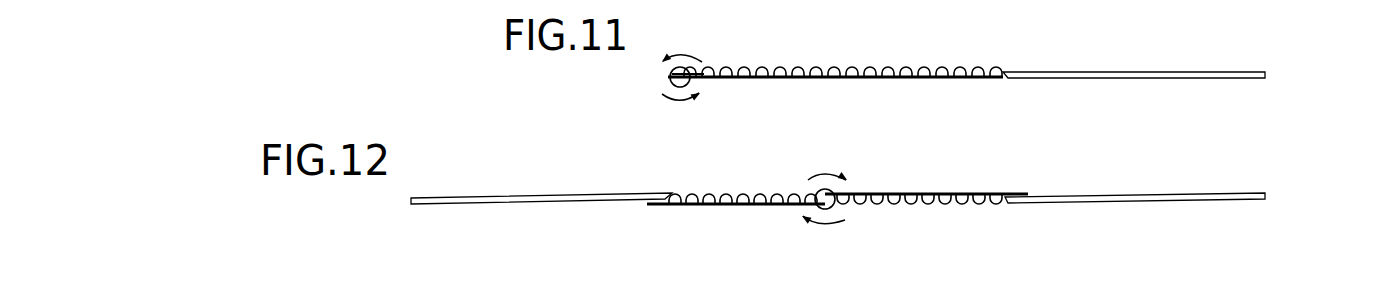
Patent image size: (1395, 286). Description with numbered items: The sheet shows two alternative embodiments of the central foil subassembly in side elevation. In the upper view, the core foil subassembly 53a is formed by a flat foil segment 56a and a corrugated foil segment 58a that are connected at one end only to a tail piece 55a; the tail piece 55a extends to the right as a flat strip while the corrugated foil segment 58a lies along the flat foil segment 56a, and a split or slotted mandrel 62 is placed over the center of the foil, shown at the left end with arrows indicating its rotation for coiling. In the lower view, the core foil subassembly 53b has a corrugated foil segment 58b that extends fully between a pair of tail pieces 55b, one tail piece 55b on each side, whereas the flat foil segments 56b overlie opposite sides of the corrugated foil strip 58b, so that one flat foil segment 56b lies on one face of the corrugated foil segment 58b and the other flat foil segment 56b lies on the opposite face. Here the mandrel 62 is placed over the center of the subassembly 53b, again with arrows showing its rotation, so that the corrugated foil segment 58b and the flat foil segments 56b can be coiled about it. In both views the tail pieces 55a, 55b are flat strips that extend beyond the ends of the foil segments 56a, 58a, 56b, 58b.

In FIG. 11, the core foil subassembly 53a is at (874, 71).
In FIG. 11, the tail piece 55a is at (1117, 79).
In FIG. 11, the flat foil segment 56a is at (783, 79).
In FIG. 11, the corrugated foil segment 58a is at (817, 67).
In FIG. 11, the split mandrel 62 is at (695, 70).
In FIG. 12, the split mandrel 62 is at (838, 190).
In FIG. 12, the core foil subassembly 53b is at (835, 207).
In FIG. 12, the tail pieces 55b is at (518, 203).
In FIG. 12, the flat foil segments 56b is at (726, 206).
In FIG. 12, the corrugated foil segment 58b is at (697, 196).